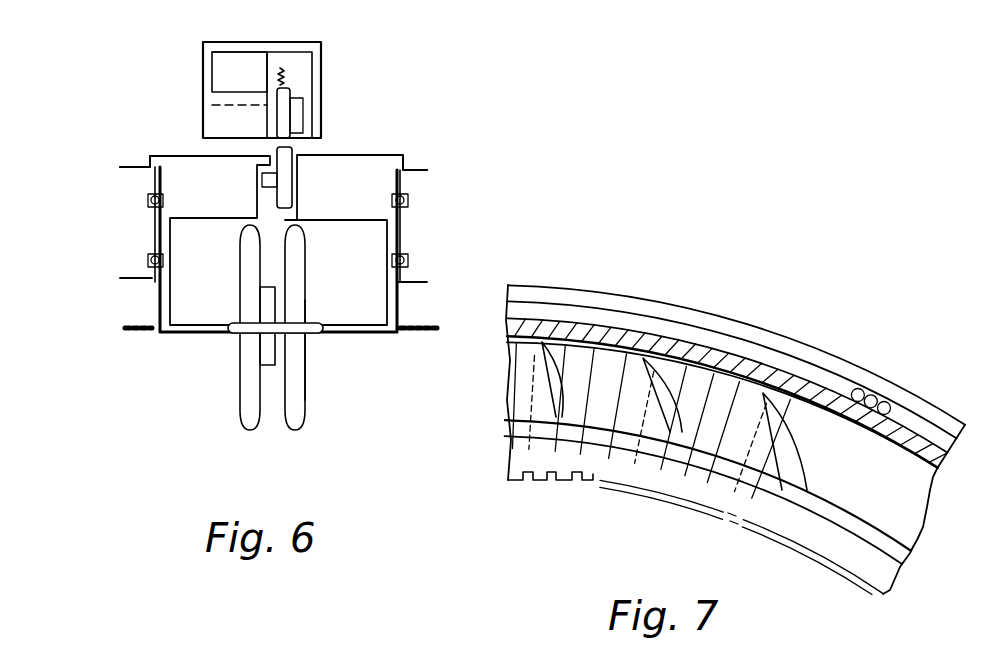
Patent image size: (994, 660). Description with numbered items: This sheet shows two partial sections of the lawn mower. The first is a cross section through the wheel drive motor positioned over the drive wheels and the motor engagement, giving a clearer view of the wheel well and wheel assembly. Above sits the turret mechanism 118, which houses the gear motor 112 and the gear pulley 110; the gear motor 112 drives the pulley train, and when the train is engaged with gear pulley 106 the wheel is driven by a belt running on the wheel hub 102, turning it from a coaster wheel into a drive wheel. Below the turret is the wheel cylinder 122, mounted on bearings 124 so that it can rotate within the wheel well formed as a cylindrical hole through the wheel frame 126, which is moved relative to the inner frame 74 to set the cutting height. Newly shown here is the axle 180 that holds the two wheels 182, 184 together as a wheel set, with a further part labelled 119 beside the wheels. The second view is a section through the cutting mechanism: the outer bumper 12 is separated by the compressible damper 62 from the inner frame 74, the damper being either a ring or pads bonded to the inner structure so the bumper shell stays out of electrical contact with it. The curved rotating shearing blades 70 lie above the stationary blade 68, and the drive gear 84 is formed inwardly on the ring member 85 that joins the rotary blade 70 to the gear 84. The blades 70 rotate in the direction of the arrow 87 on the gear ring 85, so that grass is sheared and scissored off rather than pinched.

In FIG. 6, the turret mechanism 118 is at (323, 62).
In FIG. 6, the gear motor 112 is at (252, 83).
In FIG. 6, the gear pulley 110 is at (292, 118).
In FIG. 6, the wheel frame 126 is at (140, 166).
In FIG. 6, the wheel cylinder 122 is at (222, 195).
In FIG. 6, the gear pulley 106 is at (293, 205).
In FIG. 6, the bearings 124 is at (406, 258).
In FIG. 6, the wheel hub 102 is at (267, 286).
In FIG. 6, the axle 180 is at (240, 334).
In FIG. 6, the disc edge 119 is at (306, 388).
In FIG. 6, the inner frame 74 is at (420, 337).
In FIG. 7, the inner frame 74 is at (914, 428).
In FIG. 6, the wheel 182 is at (252, 431).
In FIG. 6, the wheel 184 is at (297, 431).
In FIG. 7, the stationary blade 68 is at (744, 405).
In FIG. 7, the outer bumper 12 is at (881, 378).
In FIG. 7, the compressible damper 62 is at (890, 392).
In FIG. 7, the rotating shearing blade 70 is at (795, 453).
In FIG. 7, the arrow 87 is at (748, 500).
In FIG. 7, the drive gear 84 is at (585, 483).
In FIG. 7, the ring member 85 is at (852, 553).